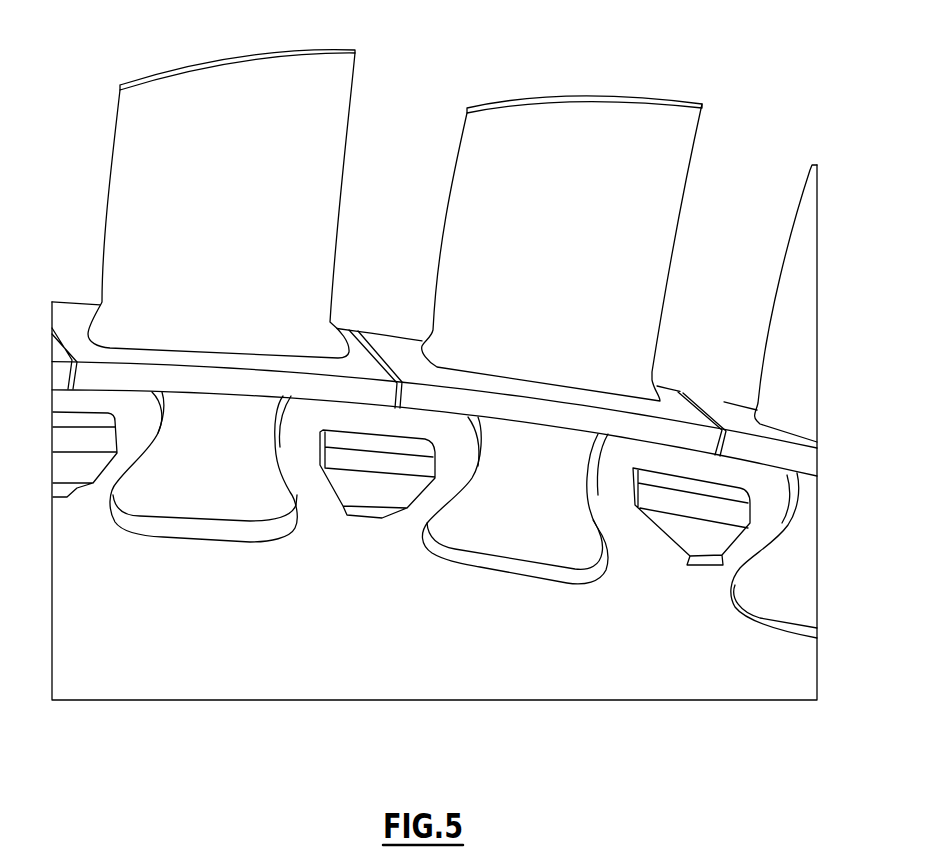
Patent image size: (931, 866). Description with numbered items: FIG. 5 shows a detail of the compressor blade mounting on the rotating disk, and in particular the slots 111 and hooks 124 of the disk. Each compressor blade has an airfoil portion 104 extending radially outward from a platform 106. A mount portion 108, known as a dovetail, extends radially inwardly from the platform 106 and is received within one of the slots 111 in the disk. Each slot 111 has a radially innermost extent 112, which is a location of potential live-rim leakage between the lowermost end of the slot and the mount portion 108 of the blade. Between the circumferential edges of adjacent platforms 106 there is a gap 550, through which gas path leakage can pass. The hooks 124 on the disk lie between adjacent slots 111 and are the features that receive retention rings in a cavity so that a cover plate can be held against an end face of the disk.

The airfoil portion 104 is at (262, 117).
The platform 106 is at (673, 403).
The mount portion 108 is at (532, 483).
The slot 111 is at (598, 488).
The radially innermost extent 112 is at (495, 572).
The hook 124 is at (378, 473).
The gap 550 is at (383, 341).